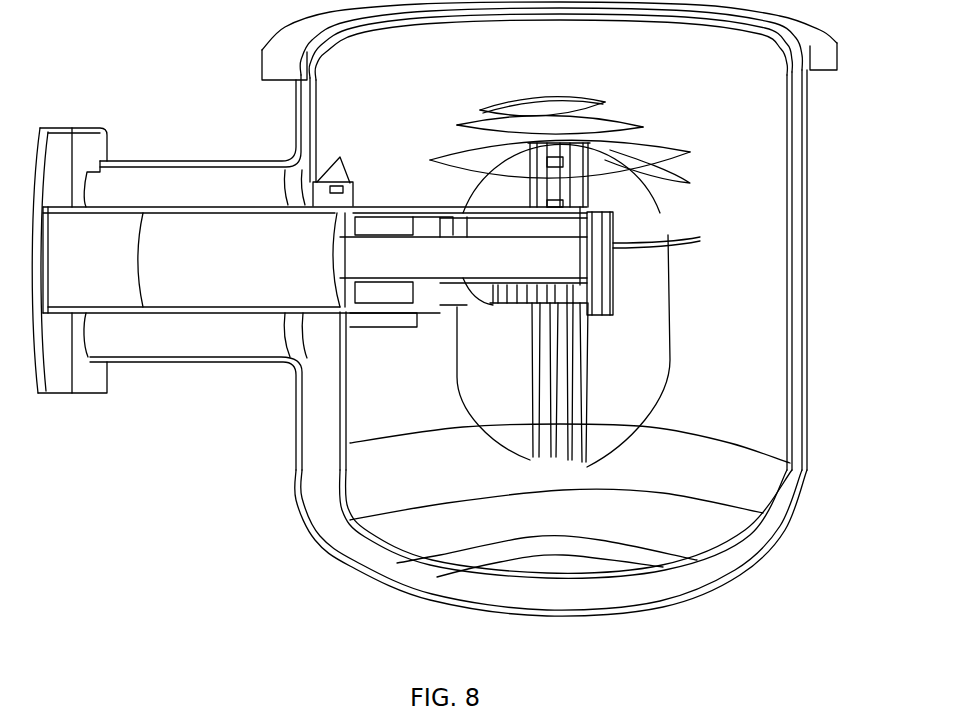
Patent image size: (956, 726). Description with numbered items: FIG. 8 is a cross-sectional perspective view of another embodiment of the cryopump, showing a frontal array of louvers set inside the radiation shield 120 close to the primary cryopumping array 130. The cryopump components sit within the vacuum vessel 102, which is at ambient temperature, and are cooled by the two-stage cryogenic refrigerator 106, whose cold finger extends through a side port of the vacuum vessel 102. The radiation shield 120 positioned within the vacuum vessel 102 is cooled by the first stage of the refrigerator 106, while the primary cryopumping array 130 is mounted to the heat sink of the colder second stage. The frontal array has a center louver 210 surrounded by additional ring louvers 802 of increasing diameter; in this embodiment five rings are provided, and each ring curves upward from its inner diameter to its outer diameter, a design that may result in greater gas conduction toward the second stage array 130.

The vacuum vessel 102 is at (808, 450).
The two-stage cryogenic refrigerator 106 is at (222, 352).
The radiation shield 120 is at (787, 374).
The primary cryopumping array 130 is at (682, 366).
The center louver 210 is at (581, 100).
The blade 802 is at (618, 113).